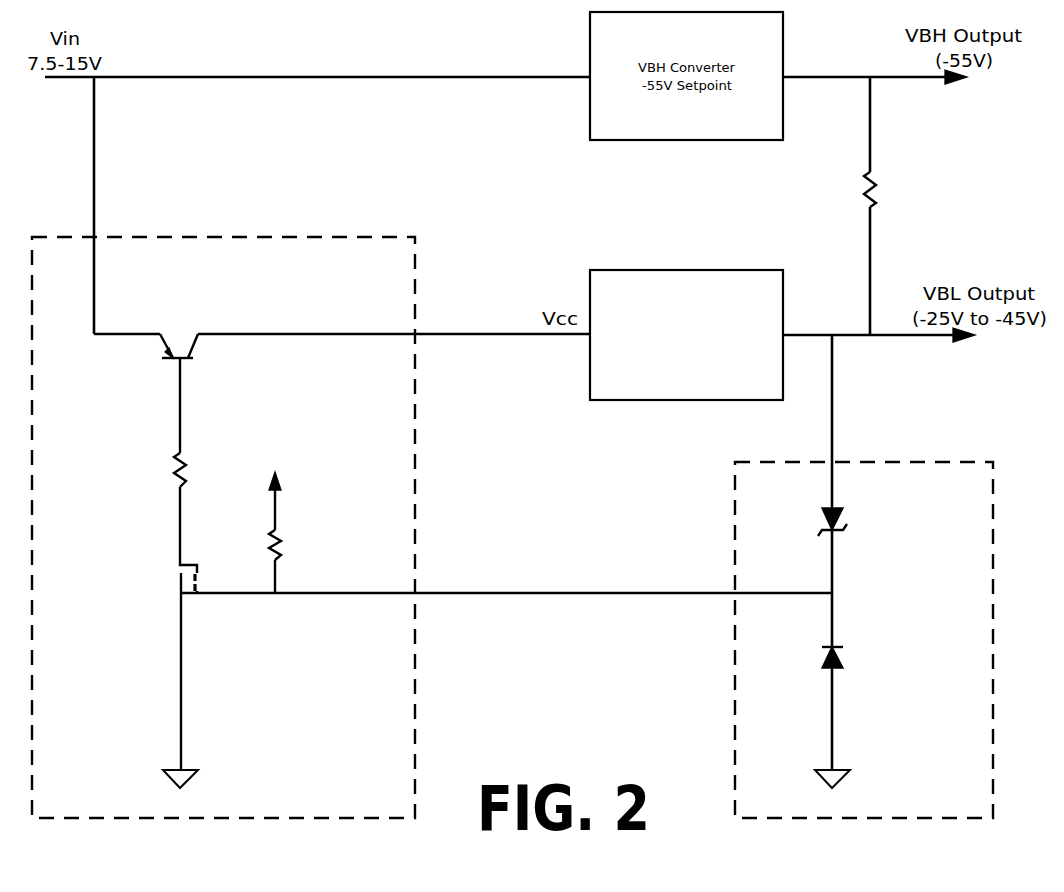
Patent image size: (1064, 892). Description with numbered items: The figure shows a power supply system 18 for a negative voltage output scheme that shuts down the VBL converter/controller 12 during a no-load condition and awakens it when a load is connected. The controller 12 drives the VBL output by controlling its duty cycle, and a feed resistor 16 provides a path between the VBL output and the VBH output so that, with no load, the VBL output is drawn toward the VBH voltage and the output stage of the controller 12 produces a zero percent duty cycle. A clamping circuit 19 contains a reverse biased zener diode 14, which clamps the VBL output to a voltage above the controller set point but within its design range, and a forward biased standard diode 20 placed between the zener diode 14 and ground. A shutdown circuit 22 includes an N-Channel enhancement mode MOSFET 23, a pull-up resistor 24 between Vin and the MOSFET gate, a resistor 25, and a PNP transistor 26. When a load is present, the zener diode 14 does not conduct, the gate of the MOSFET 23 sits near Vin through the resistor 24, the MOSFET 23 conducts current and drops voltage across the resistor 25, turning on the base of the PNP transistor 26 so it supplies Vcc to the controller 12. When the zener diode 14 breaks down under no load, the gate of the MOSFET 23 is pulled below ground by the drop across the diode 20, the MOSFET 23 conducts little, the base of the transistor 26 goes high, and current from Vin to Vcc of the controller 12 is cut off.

The VBL converter/controller 12 is at (617, 268).
The zener diode 14 is at (822, 518).
The feed resistor 16 is at (876, 188).
The power supply system 18 is at (578, 625).
The clamping circuit 19 is at (757, 462).
The standard diode 20 is at (822, 665).
The shutdown circuit 22 is at (330, 237).
The N-Channel enhancement mode MOSFET 23 is at (175, 580).
The pull-up resistor 24 is at (285, 532).
The resistor 25 is at (186, 468).
The PNP transistor 26 is at (218, 355).